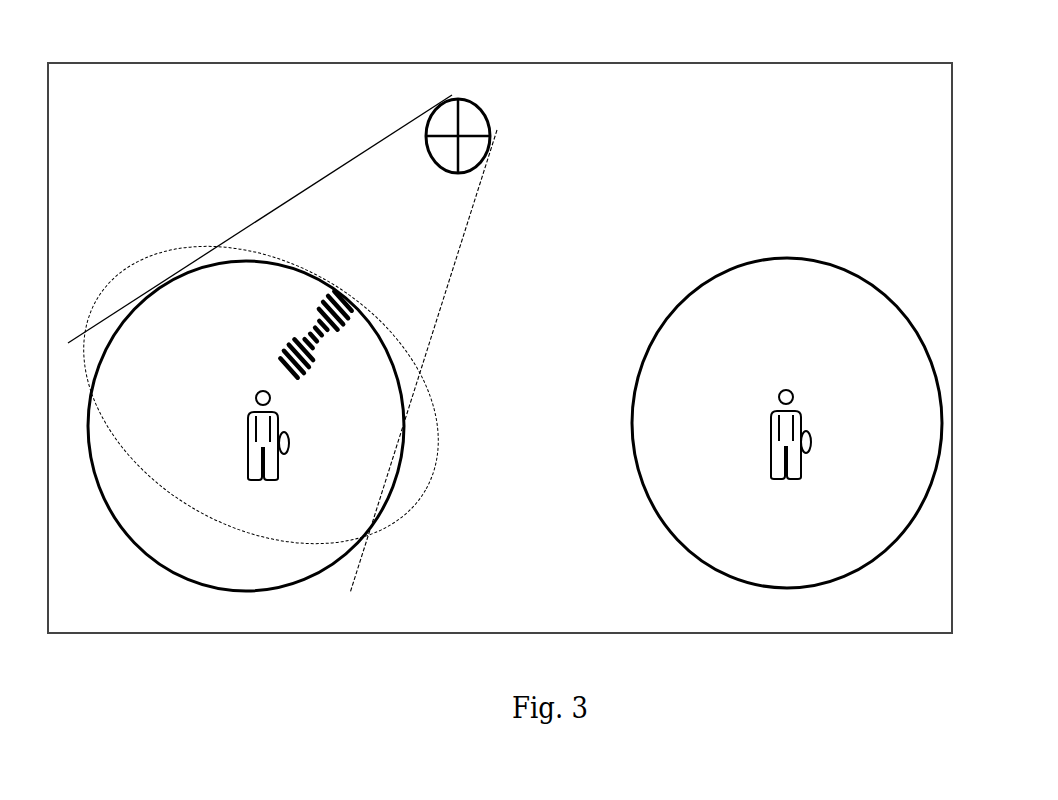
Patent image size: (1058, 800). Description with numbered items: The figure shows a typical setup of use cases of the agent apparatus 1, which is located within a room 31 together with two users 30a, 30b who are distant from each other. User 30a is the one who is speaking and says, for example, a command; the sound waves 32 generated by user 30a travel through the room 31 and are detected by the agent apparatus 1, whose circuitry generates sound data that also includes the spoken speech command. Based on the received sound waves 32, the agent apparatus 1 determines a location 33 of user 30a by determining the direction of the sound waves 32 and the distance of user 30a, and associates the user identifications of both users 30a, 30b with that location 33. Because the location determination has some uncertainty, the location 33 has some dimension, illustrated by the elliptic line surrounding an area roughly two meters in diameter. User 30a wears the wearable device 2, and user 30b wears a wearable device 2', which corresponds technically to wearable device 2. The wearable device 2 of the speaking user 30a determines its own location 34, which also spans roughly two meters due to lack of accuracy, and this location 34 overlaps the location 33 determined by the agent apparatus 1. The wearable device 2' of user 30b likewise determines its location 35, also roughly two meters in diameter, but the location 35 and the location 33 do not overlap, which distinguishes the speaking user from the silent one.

The agent apparatus 1 is at (487, 120).
The wearable device 2 is at (306, 433).
The wearable device 2' is at (830, 434).
The user 30a is at (257, 395).
The user 30b is at (778, 390).
The room 31 is at (655, 63).
The sound waves 32 is at (278, 340).
The location 33 is at (428, 492).
The location 34 is at (142, 553).
The location 35 is at (655, 515).